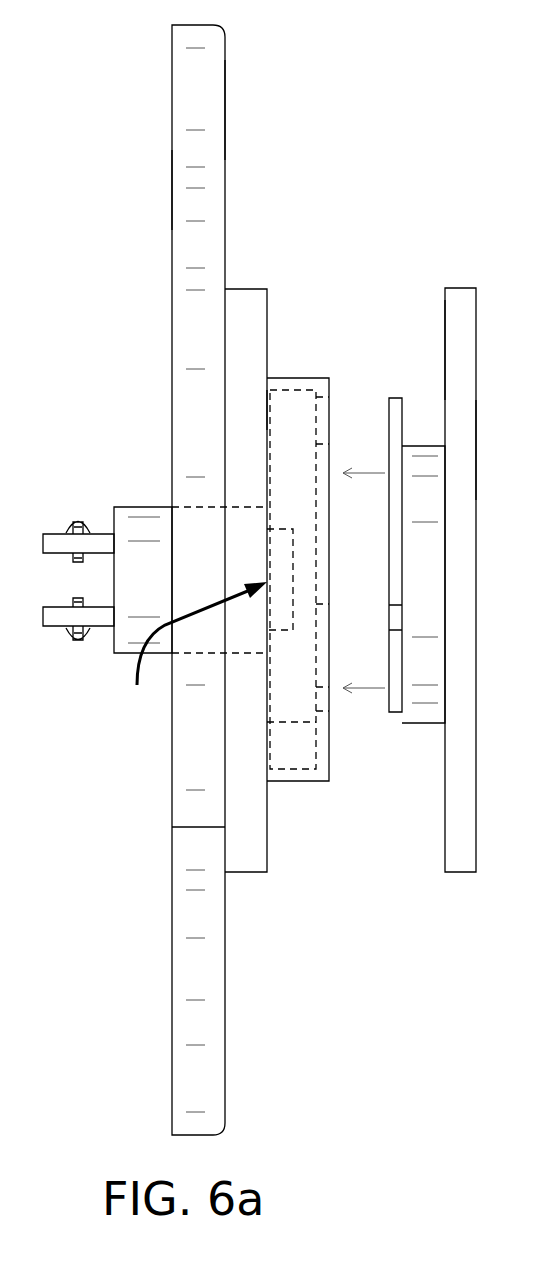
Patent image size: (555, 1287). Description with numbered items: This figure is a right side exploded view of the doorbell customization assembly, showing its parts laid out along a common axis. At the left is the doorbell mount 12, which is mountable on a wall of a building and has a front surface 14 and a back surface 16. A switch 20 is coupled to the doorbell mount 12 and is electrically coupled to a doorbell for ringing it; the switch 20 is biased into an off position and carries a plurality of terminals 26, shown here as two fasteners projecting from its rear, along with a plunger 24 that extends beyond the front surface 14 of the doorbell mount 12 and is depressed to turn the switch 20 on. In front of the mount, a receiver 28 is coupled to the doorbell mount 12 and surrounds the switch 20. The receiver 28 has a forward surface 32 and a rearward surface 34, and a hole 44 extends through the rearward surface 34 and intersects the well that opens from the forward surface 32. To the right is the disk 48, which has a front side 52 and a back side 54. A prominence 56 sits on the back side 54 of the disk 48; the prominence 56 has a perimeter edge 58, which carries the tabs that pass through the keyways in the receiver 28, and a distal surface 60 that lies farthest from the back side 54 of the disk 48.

The doorbell mount 12 is at (226, 248).
The front surface 14 is at (227, 115).
The back surface 16 is at (171, 188).
The switch 20 is at (135, 506).
The plunger 24 is at (293, 617).
The terminals 26 is at (55, 534).
The receiver 28 is at (295, 781).
The forward surface 32 is at (328, 385).
The rearward surface 34 is at (267, 412).
The hole 44 is at (196, 656).
The disk 48 is at (477, 288).
The front side 52 is at (477, 447).
The back side 54 is at (442, 338).
The prominence 56 is at (413, 724).
The perimeter edge 58 is at (402, 432).
The distal surface 60 is at (390, 522).